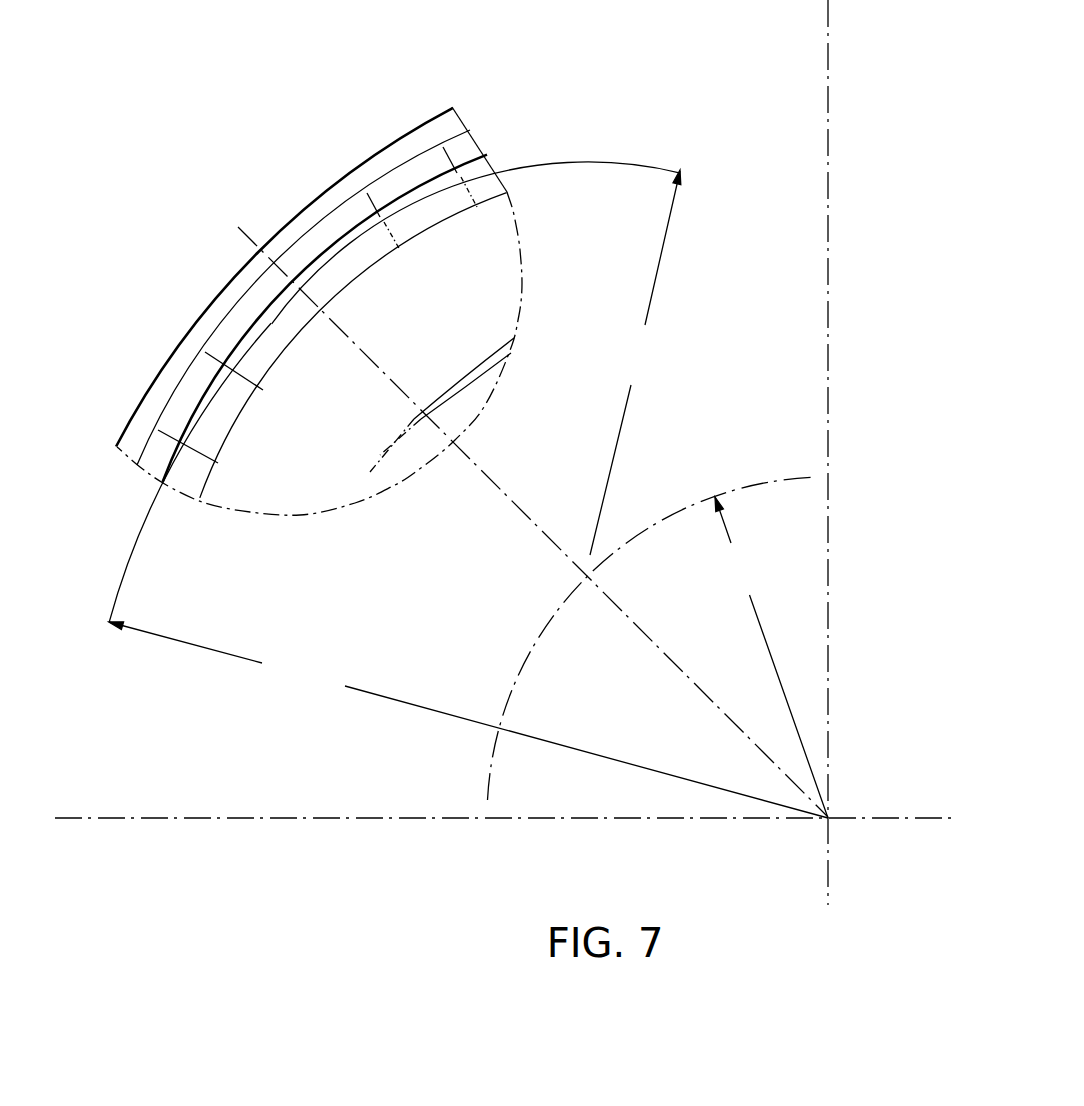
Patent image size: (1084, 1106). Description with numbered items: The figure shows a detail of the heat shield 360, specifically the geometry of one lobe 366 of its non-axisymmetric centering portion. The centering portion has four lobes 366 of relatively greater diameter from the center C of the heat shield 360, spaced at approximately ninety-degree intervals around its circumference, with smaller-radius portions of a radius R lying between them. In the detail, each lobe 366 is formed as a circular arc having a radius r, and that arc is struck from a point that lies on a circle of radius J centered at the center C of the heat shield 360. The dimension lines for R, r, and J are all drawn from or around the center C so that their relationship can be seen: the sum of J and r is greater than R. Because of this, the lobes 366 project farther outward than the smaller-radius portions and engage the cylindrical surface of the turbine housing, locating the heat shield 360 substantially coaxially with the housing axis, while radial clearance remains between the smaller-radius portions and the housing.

The heat shield 360 is at (347, 266).
The lobe 366 is at (318, 234).
The center of the heat shield C is at (834, 812).
The radius of the smaller-radius portions R is at (468, 570).
The radius of the lobe circular arc r is at (476, 358).
The radius of the lobe-center circle J is at (658, 647).